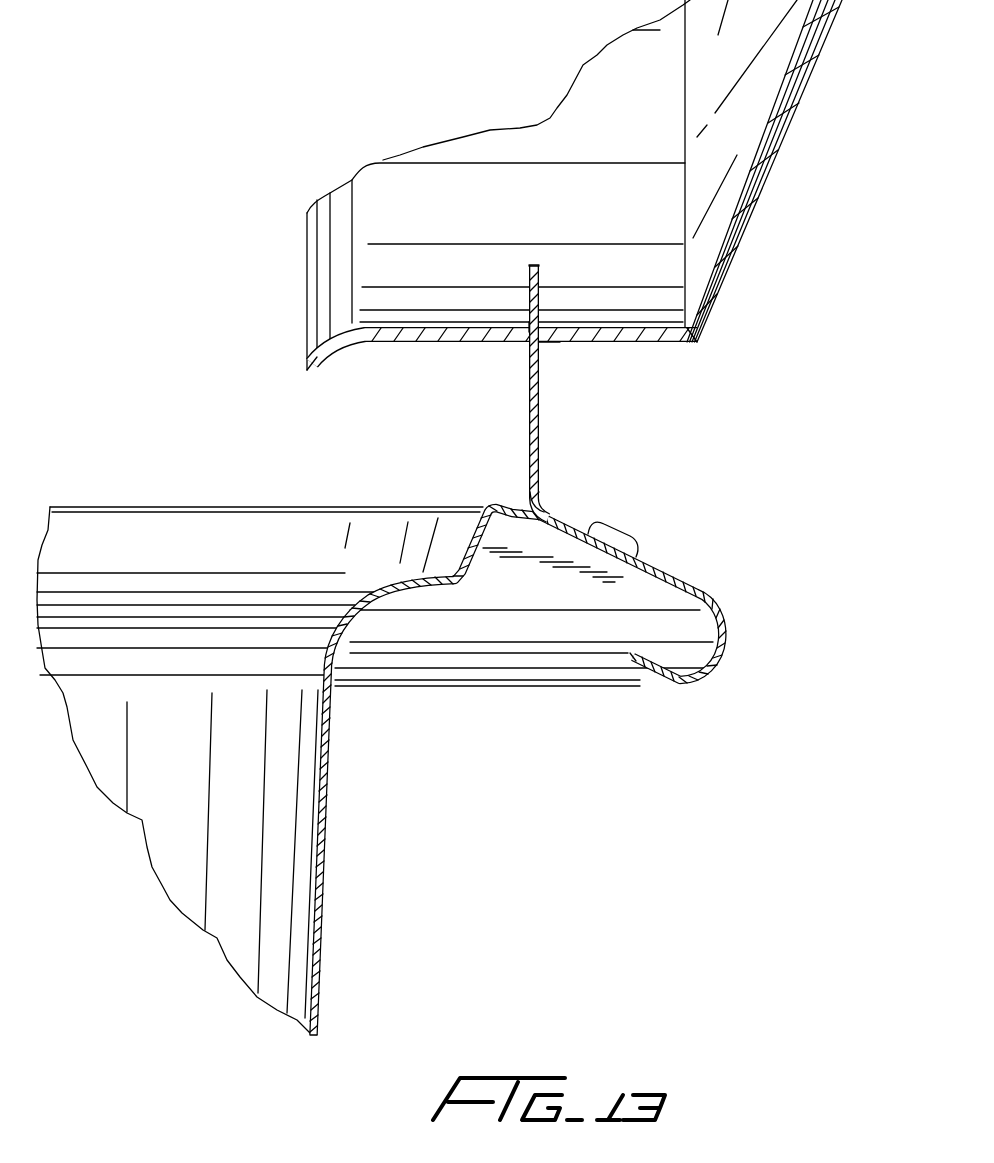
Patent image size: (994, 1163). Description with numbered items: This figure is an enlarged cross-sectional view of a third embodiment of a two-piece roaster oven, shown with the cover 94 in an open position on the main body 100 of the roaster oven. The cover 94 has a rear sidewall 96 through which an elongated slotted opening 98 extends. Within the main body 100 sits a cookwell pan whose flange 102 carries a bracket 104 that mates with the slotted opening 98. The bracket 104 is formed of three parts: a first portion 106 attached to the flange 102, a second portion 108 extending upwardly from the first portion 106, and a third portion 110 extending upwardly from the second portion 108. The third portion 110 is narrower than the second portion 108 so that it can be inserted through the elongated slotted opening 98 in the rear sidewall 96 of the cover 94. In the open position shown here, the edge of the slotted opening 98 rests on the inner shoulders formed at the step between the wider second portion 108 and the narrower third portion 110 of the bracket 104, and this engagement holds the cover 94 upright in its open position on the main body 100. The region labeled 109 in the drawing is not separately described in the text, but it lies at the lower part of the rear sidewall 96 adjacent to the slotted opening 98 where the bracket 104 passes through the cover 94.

The cover 94 is at (780, 140).
The rear sidewall 96 is at (387, 332).
The elongated slotted opening 98 is at (533, 325).
The main body 100 is at (322, 908).
The flange 102 is at (692, 677).
The bracket 104 is at (537, 498).
The first portion 106 is at (662, 568).
The second portion 108 is at (537, 417).
The bottom wall 109 is at (540, 340).
The third portion 110 is at (528, 275).